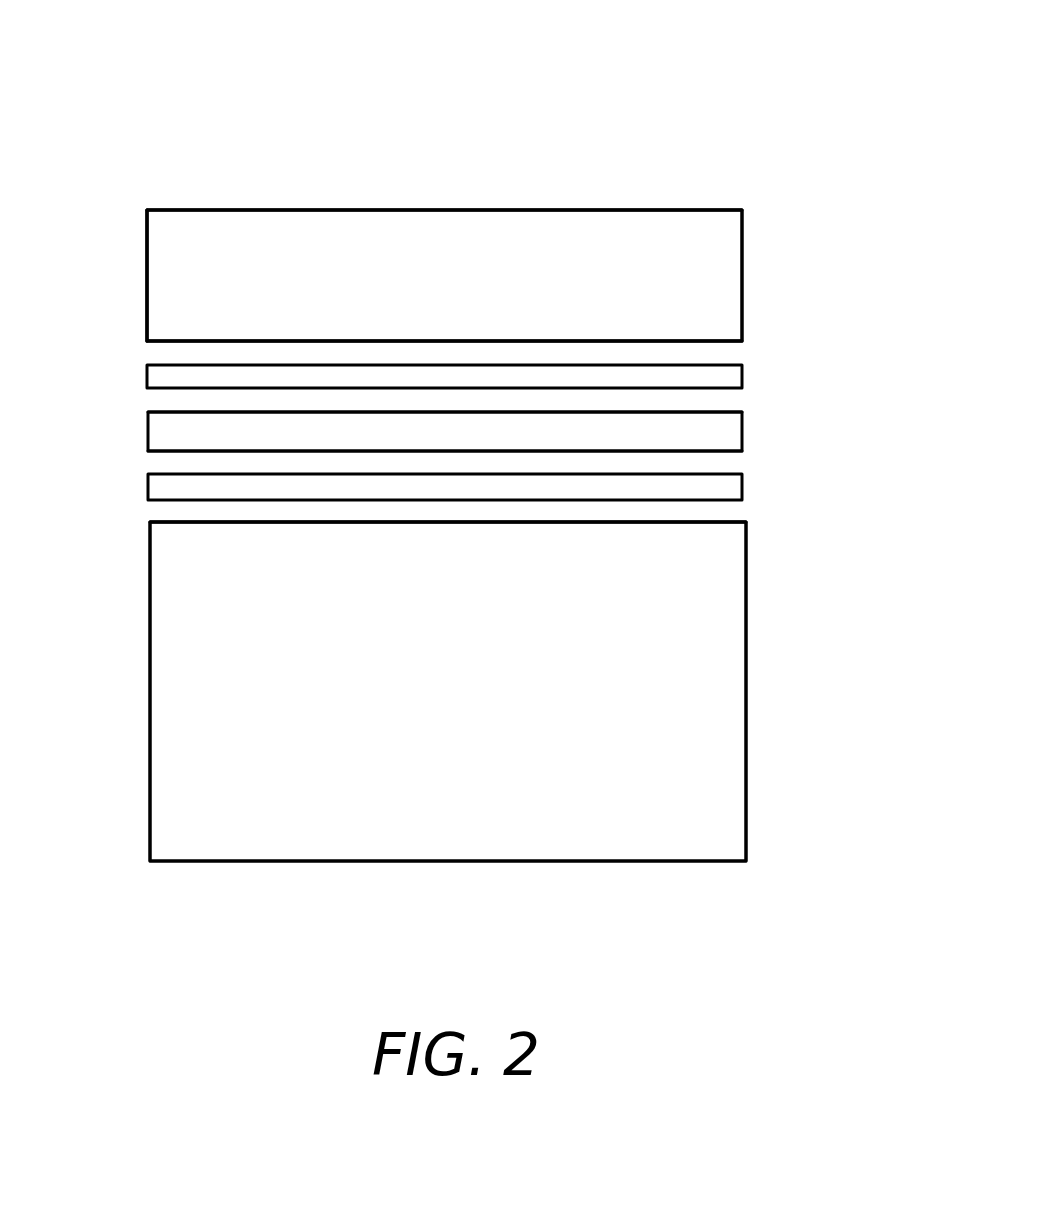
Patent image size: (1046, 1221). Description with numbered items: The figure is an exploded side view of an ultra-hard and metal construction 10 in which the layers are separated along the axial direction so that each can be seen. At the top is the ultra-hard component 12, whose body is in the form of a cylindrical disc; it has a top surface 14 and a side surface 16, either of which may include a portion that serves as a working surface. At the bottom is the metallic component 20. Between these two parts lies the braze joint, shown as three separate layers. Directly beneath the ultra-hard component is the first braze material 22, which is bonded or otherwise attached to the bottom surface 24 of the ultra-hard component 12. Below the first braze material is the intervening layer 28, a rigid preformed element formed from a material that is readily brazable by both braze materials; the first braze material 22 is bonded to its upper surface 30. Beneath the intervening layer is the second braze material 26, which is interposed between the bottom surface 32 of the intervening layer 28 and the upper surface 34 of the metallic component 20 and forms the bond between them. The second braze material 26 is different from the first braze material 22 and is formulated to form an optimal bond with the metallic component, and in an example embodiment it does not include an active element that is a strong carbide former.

The ultra-hard and metal construction 10 is at (811, 177).
The ultra-hard component 12 is at (703, 294).
The top surface 14 is at (445, 210).
The side surface 16 is at (177, 258).
The metallic component 20 is at (705, 720).
The first braze material 22 is at (170, 377).
The bottom surface 24 is at (178, 341).
The second braze material 26 is at (168, 490).
The intervening layer 28 is at (168, 433).
The upper surface 30 is at (186, 412).
The bottom surface 32 is at (186, 452).
The upper surface 34 is at (190, 522).